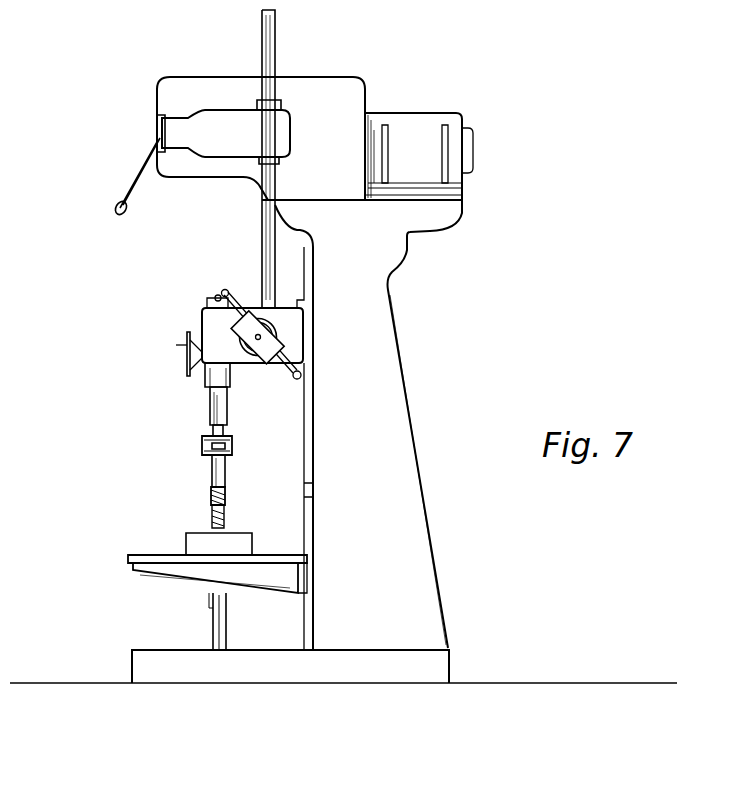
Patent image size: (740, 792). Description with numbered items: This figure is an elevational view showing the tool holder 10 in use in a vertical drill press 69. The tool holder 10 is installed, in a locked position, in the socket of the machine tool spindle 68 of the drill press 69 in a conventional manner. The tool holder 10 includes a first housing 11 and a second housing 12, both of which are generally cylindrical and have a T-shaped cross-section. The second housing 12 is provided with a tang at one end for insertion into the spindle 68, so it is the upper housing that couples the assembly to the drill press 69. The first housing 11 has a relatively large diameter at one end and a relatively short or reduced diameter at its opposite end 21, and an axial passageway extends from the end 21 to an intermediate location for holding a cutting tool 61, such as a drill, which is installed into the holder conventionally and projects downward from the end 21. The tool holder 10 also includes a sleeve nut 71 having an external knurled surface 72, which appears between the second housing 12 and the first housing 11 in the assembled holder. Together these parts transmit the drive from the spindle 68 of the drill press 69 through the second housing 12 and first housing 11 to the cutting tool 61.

The drill press 69 is at (410, 258).
The spindle 68 is at (228, 405).
The second housing 12 is at (210, 431).
The sleeve nut 71 is at (231, 447).
The external knurled surface 72 is at (201, 447).
The tool holder 10 is at (205, 474).
The first housing 11 is at (226, 472).
The opposite end 21 is at (226, 497).
The cutting tool 61 is at (223, 523).